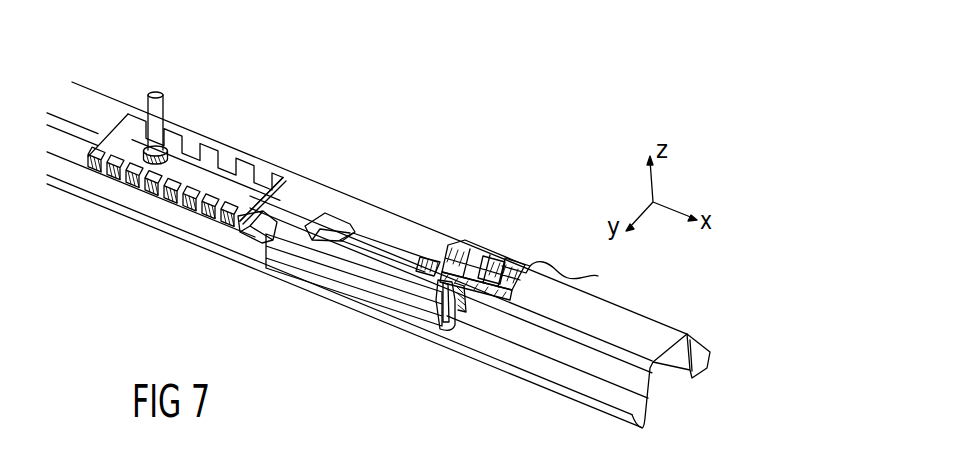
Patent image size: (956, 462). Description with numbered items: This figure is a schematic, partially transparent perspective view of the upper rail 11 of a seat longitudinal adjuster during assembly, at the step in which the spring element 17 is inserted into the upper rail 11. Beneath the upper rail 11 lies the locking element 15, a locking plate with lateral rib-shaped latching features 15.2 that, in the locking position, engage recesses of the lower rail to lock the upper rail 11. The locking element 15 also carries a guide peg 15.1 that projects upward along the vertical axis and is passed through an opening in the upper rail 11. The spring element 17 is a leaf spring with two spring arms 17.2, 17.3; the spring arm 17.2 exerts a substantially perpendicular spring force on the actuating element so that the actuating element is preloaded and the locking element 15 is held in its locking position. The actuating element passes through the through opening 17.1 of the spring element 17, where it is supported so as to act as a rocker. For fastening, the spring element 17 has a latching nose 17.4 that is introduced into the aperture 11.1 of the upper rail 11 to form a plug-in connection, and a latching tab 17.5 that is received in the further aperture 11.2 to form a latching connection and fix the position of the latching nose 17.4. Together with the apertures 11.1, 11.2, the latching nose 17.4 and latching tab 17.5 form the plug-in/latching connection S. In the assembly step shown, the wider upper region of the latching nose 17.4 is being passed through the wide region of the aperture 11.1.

The upper rail 11 is at (91, 102).
The aperture 11.1 is at (473, 241).
The further aperture 11.2 is at (497, 262).
The locking element 15 is at (209, 168).
The guide peg 15.1 is at (156, 90).
The latching features 15.2 is at (274, 178).
The spring element 17 is at (440, 240).
The through opening 17.1 is at (453, 322).
The spring arm 17.2 is at (329, 221).
The spring arm 17.3 is at (268, 243).
The latching nose 17.4 is at (438, 232).
The latching tab 17.5 is at (513, 260).
The plug-in/latching connection S is at (576, 277).